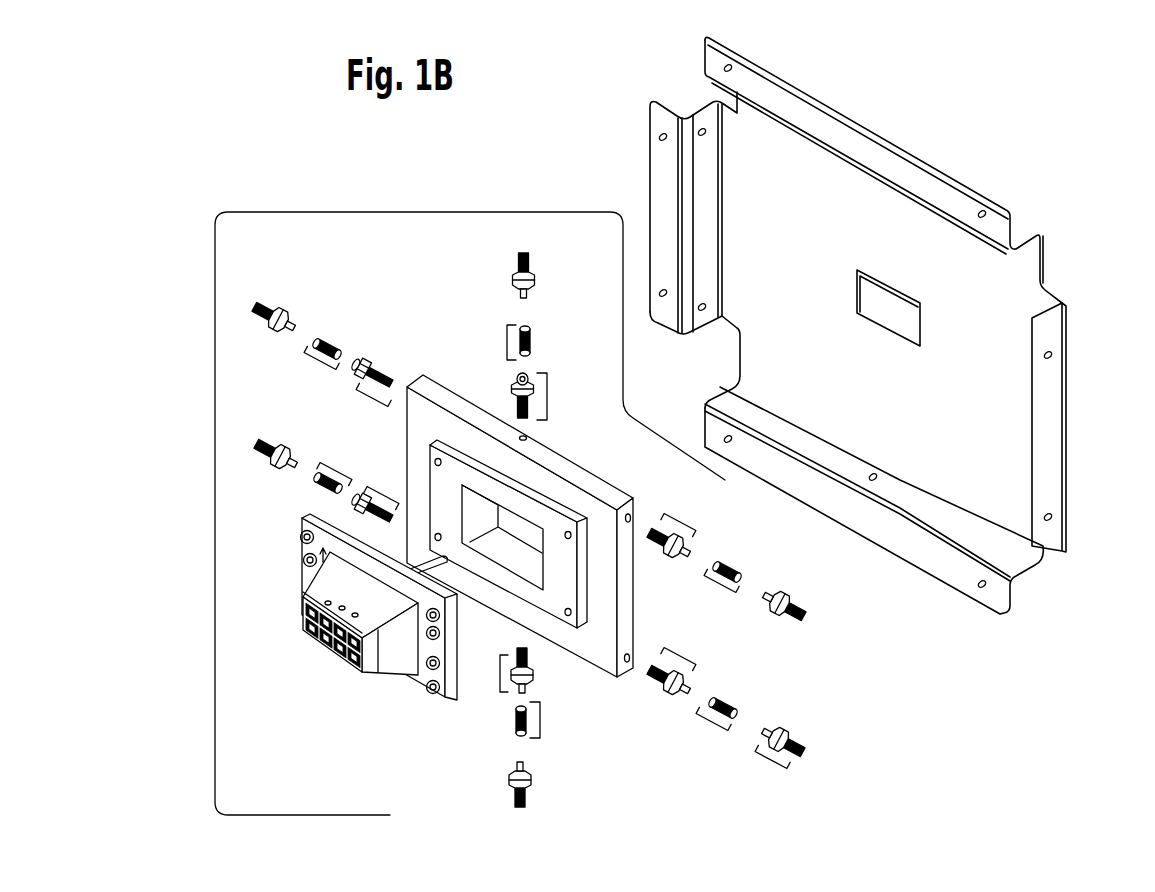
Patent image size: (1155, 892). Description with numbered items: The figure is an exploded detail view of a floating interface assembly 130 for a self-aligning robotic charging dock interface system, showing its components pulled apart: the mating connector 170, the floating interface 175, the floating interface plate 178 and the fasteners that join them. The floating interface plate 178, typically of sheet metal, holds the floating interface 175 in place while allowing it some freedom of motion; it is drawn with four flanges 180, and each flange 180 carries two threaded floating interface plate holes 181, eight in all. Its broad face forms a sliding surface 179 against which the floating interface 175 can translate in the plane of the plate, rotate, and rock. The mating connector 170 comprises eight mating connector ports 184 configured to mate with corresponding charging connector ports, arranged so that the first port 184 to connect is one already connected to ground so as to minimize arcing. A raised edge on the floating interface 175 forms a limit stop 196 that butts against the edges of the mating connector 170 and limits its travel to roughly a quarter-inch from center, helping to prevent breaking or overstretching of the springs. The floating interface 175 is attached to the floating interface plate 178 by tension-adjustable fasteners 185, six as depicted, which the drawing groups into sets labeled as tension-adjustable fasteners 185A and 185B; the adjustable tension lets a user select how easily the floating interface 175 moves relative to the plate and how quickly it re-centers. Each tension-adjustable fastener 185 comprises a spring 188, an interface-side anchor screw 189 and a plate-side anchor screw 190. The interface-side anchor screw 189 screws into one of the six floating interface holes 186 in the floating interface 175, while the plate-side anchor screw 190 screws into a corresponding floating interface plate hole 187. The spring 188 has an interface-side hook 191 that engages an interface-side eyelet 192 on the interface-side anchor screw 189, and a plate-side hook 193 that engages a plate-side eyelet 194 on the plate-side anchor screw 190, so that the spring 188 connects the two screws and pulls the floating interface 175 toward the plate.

The floating interface assembly 130 is at (906, 743).
The mating connector 170 is at (345, 640).
The floating interface 175 is at (378, 209).
The floating interface plate 178 is at (881, 333).
The sliding surface 179 is at (863, 382).
The flange 180 is at (859, 160).
The floating interface plate hole 181 is at (663, 131).
The mating connector port 184 is at (297, 640).
The tension-adjustable fastener 185 is at (413, 367).
The fastener set 185A is at (490, 420).
The fastener set 185B is at (545, 645).
The floating interface hole 186 is at (530, 441).
The floating interface plate hole 187 is at (702, 138).
The spring 188 is at (346, 470).
The interface-side anchor screw 189 is at (388, 478).
The plate-side anchor screw 190 is at (283, 334).
The interface-side hook 191 is at (528, 352).
The interface-side eyelet 192 is at (523, 370).
The plate-side hook 193 is at (525, 330).
The plate-side eyelet 194 is at (770, 588).
The limit stop 196 is at (534, 552).